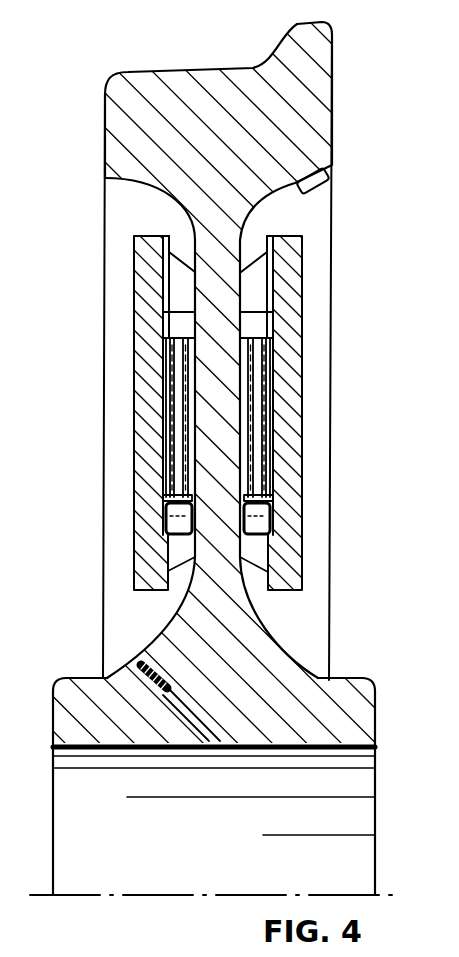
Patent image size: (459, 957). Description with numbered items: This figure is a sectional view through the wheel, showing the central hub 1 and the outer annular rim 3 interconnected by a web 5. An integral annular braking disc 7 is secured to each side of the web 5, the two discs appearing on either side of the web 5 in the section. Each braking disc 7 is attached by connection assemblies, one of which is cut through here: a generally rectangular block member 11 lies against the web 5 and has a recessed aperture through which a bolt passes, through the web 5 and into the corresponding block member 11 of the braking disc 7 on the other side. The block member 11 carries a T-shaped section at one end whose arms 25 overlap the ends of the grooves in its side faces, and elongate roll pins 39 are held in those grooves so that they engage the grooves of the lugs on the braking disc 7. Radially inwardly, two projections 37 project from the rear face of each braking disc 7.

The central hub 1 is at (105, 693).
The outer annular rim 3 is at (142, 127).
The web 5 is at (213, 238).
The annular braking disc 7 is at (150, 345).
The block member 11 is at (165, 393).
The arms of the T-shaped section 25 is at (177, 322).
The projections 37 is at (177, 523).
The roll pins 39 is at (175, 435).